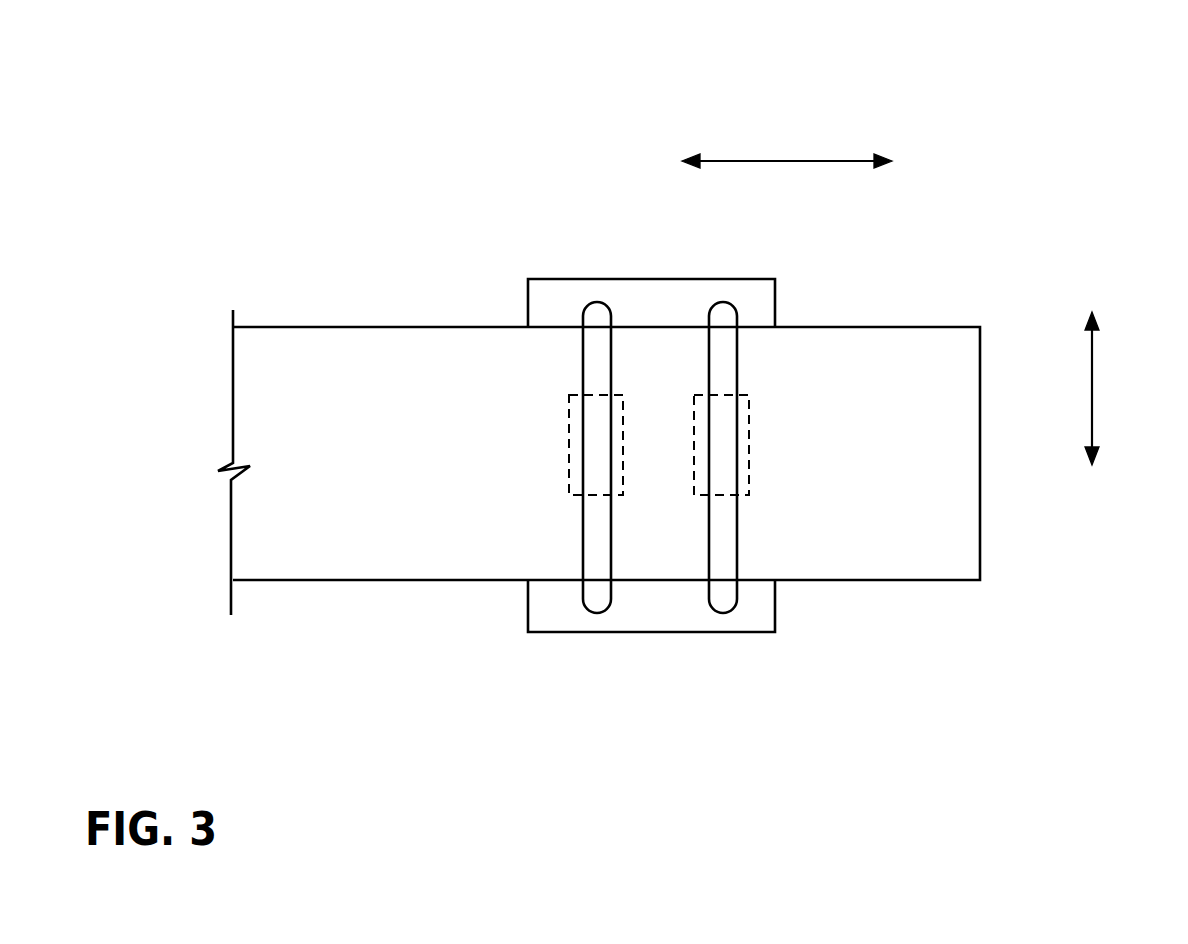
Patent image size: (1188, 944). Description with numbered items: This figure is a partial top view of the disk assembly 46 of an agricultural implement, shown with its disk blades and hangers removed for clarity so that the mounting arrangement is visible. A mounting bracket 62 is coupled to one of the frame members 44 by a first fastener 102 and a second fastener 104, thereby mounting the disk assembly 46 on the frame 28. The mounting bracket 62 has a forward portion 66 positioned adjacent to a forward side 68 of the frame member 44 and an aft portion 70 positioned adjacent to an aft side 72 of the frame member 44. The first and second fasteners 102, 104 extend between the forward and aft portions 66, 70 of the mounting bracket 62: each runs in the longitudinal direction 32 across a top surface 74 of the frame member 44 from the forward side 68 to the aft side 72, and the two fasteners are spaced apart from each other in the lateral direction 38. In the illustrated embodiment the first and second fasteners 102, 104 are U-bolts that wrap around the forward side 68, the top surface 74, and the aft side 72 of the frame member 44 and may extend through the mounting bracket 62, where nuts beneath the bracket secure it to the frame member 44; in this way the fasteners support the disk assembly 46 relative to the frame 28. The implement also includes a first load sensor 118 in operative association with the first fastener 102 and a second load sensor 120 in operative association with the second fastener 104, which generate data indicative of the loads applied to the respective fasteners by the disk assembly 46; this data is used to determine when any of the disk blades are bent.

The frame 28 is at (335, 273).
The longitudinal direction 32 is at (1093, 360).
The lateral direction 38 is at (784, 160).
The frame member 44 is at (418, 326).
The disk assembly 46 is at (310, 113).
The mounting bracket 62 is at (560, 278).
The forward portion 66 is at (693, 279).
The forward side 68 is at (906, 327).
The aft portion 70 is at (747, 633).
The aft side 72 is at (393, 581).
The top surface 74 is at (606, 453).
The first fastener 102 is at (583, 537).
The second fastener 104 is at (737, 537).
The first load sensor 118 is at (570, 452).
The second load sensor 120 is at (749, 453).